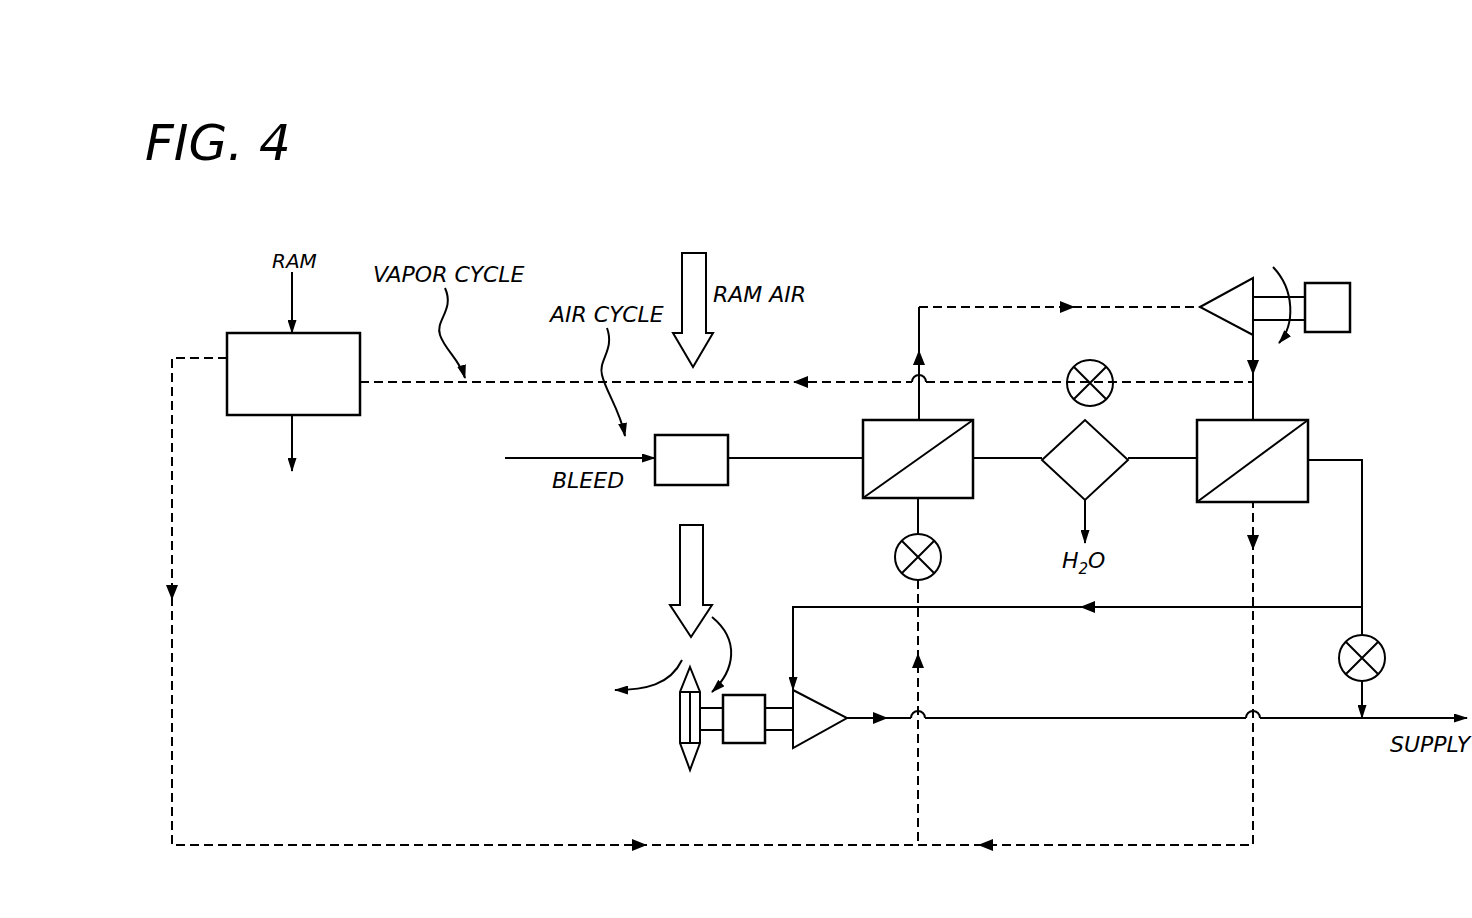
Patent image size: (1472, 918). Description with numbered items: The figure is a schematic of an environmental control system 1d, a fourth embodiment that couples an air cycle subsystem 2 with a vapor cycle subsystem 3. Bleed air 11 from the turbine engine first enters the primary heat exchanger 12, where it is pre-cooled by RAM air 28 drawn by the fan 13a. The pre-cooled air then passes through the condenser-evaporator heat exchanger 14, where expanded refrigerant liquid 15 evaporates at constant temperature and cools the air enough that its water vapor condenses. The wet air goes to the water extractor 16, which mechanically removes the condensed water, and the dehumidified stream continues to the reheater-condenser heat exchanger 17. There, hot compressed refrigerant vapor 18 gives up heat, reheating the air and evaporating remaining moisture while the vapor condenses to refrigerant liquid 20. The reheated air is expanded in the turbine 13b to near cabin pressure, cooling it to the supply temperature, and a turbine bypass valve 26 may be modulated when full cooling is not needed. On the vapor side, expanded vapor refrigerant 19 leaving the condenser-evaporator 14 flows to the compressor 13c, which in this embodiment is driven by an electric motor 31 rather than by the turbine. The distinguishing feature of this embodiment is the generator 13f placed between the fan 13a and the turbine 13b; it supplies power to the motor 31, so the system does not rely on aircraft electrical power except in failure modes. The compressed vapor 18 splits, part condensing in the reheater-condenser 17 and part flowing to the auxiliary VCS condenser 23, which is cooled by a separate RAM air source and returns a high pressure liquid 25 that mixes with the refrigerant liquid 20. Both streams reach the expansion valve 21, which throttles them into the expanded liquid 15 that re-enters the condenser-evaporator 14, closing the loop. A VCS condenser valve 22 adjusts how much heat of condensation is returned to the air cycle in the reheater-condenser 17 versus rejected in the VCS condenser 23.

The environmental control system 1d is at (1053, 214).
The air cycle subsystem 2 is at (606, 395).
The vapor cycle subsystem 3 is at (445, 330).
The bleed air 11 is at (523, 458).
The primary heat exchanger 12 is at (667, 485).
The fan 13a is at (678, 727).
The turbine 13b is at (825, 738).
The compressor 13c is at (1233, 290).
The generator 13f is at (733, 743).
The condenser-evaporator heat exchanger 14 is at (863, 480).
The expanded refrigerant liquid 15 is at (921, 510).
The water extractor 16 is at (1108, 485).
The reheater-condenser heat exchanger 17 is at (1308, 445).
The compressed refrigerant vapor 18 is at (1257, 347).
The expanded vapor refrigerant 19 is at (1000, 305).
The refrigerant liquid 20 is at (1258, 515).
The expansion valve 21 is at (895, 553).
The VCS condenser valve 22 is at (1085, 360).
The auxiliary VCS condenser 23 is at (240, 333).
The high pressure liquid 25 is at (170, 470).
The turbine bypass valve 26 is at (1385, 655).
The RAM air 28 is at (682, 270).
The electric motor 31 is at (1330, 283).